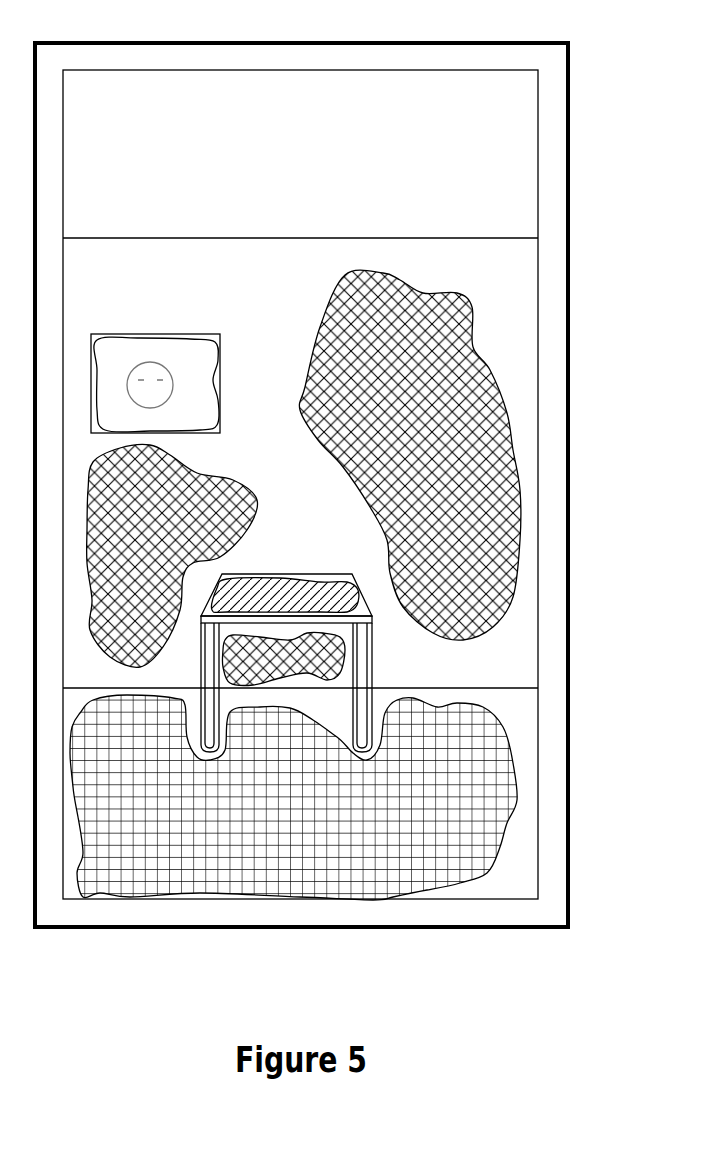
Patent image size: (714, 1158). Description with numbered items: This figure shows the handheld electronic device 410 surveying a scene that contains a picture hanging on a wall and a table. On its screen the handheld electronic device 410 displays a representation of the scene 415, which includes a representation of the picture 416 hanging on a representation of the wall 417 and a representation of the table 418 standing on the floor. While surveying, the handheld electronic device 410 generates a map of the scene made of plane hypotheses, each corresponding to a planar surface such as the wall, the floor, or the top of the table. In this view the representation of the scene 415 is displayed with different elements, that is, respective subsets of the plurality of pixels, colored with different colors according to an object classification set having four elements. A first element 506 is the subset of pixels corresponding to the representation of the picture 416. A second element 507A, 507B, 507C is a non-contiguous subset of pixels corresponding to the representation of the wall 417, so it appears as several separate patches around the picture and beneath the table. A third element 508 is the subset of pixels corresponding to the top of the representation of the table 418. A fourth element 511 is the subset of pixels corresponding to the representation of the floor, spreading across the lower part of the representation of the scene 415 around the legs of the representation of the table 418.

The handheld electronic device 410 is at (348, 40).
The representation of the scene 415 is at (522, 313).
The representation of the wall 417 is at (155, 298).
The representation of the picture 416 is at (192, 335).
The first element 506 is at (198, 418).
The second element 507A is at (188, 520).
The second element 507B is at (308, 668).
The second element 507C is at (452, 473).
The representation of the table 418 is at (297, 575).
The third element 508 is at (318, 608).
The fourth element 511 is at (320, 796).